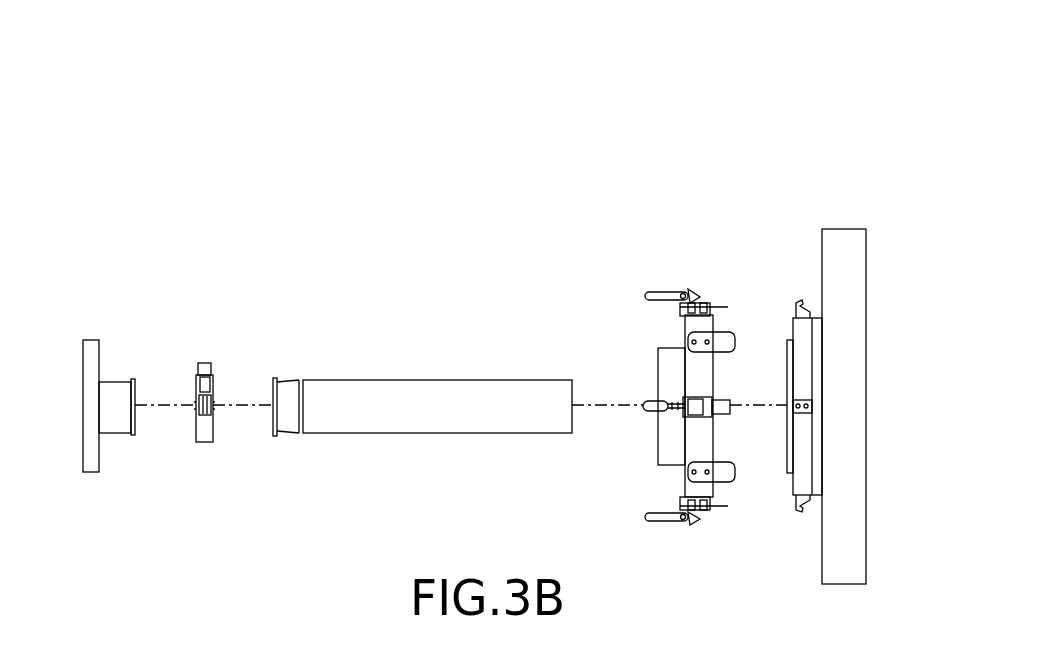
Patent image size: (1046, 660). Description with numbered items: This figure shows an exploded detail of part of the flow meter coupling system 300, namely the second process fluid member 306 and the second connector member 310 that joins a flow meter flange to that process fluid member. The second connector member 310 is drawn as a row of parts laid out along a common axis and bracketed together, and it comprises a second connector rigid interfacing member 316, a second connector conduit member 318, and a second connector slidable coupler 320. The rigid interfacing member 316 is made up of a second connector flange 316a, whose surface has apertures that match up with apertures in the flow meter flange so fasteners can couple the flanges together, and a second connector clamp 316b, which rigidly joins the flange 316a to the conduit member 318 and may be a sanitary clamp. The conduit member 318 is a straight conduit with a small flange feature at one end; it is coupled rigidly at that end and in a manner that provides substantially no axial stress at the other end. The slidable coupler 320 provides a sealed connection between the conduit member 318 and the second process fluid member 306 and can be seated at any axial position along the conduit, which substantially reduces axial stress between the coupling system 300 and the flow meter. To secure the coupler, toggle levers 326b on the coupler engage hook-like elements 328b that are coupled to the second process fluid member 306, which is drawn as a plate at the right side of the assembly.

The flow meter coupling system 300 is at (176, 102).
The second process fluid member 306 is at (847, 232).
The second connector member 310 is at (695, 243).
The second connector rigid interfacing member 316 is at (198, 441).
The second connector flange 316a is at (83, 432).
The second connector clamp 316b is at (207, 345).
The second connector conduit member 318 is at (355, 430).
The second connector slidable coupler 320 is at (685, 468).
The toggle levers 326b is at (647, 296).
The hook-like elements 328b is at (800, 312).